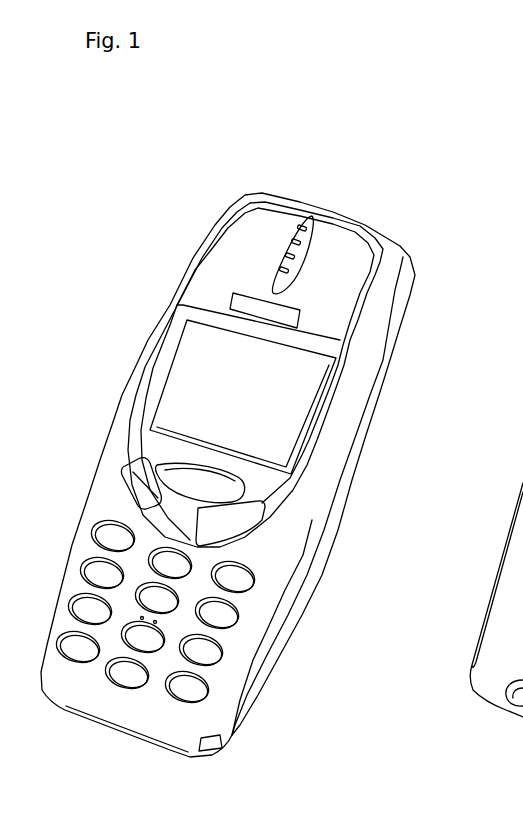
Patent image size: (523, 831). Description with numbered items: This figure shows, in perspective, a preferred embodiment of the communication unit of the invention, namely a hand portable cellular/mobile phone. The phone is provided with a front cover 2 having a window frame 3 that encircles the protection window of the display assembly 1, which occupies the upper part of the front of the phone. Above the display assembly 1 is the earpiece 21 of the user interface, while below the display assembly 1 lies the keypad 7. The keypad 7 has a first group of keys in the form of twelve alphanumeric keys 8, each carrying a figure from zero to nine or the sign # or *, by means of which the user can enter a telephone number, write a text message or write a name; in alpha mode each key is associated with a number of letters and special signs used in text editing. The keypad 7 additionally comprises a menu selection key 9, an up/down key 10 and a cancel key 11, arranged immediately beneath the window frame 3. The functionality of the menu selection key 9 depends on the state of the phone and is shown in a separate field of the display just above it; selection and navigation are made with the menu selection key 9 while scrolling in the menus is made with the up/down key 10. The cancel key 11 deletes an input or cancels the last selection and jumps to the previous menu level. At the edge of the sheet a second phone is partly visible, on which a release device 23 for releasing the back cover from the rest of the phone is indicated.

The display assembly 1 is at (213, 358).
The front cover 2 is at (238, 687).
The window frame 3 is at (320, 408).
The keypad 7 is at (137, 613).
The alphanumeric keys 8 is at (190, 686).
The menu selection key 9 is at (200, 487).
The up/down key 10 is at (227, 525).
The cancel key 11 is at (136, 486).
The earpiece 21 is at (301, 242).
The release device 23 is at (522, 763).